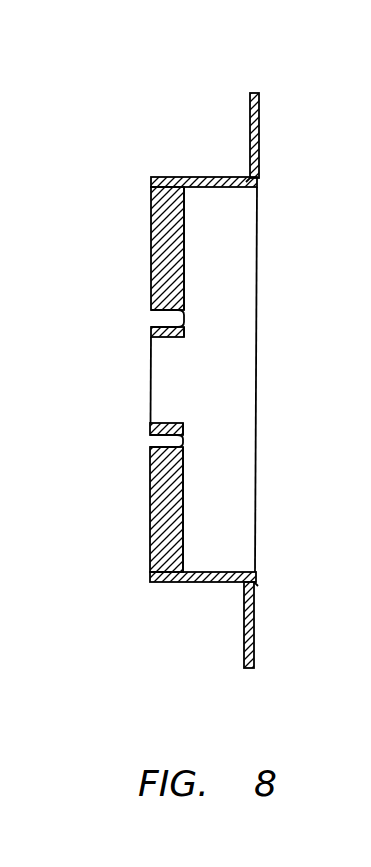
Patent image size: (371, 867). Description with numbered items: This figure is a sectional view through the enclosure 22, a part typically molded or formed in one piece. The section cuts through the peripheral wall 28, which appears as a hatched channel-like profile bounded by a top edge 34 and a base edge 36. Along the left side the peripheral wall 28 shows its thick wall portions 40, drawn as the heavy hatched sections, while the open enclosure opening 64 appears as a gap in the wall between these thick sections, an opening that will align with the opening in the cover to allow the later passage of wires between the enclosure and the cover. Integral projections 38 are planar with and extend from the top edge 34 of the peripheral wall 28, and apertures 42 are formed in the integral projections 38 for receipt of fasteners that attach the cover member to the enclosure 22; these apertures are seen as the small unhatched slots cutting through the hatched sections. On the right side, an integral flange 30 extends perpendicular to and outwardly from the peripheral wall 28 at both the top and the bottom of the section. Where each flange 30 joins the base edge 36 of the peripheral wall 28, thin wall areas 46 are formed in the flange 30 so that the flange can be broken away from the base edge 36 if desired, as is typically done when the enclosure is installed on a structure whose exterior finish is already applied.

The enclosure 22 is at (134, 136).
The peripheral wall 28 is at (228, 180).
The integral flange 30 is at (259, 111).
The top edge 34 is at (152, 186).
The base edge 36 is at (259, 186).
The integral projections 38 is at (156, 234).
The thick wall portions 40 is at (186, 265).
The apertures 42 is at (158, 316).
The thin wall areas 46 is at (262, 172).
The enclosure opening 64 is at (168, 380).